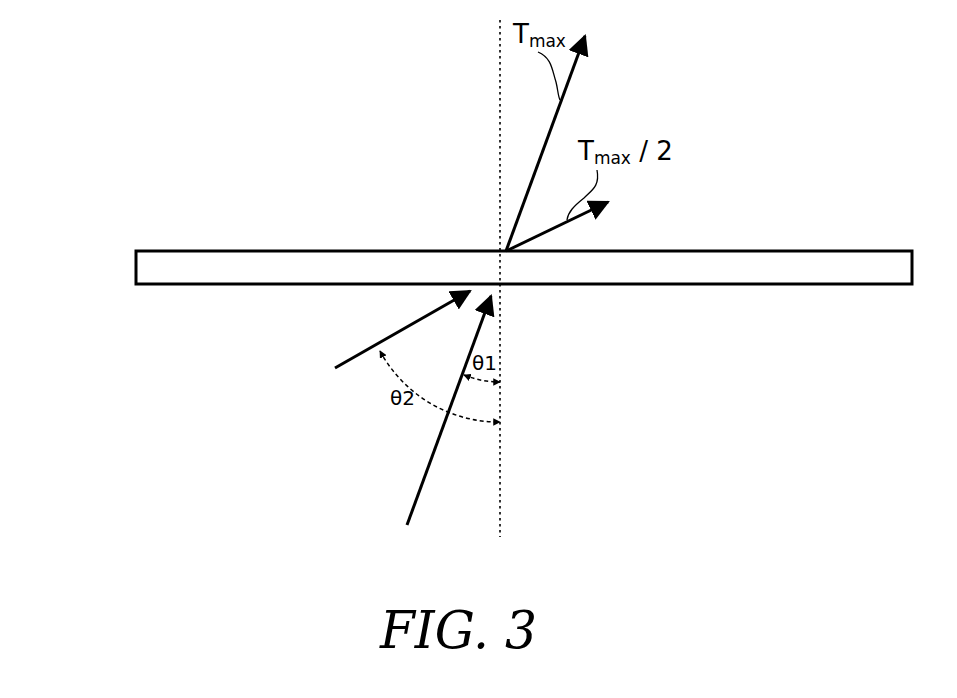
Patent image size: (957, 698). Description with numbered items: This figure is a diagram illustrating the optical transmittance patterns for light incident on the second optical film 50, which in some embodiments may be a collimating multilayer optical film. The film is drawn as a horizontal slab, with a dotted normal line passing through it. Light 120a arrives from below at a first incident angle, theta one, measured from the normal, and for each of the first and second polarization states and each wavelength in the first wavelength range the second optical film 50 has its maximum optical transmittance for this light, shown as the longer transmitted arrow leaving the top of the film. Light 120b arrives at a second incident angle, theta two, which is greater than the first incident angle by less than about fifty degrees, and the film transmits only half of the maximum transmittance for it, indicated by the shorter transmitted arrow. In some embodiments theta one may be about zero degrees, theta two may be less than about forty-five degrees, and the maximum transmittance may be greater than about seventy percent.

The second optical film 50 is at (141, 266).
The light incident at a first incident angle 120a is at (413, 505).
The light incident at a second incident angle 120b is at (348, 358).